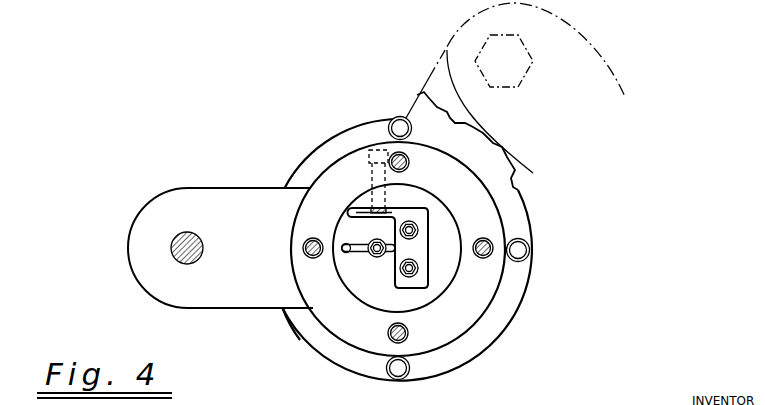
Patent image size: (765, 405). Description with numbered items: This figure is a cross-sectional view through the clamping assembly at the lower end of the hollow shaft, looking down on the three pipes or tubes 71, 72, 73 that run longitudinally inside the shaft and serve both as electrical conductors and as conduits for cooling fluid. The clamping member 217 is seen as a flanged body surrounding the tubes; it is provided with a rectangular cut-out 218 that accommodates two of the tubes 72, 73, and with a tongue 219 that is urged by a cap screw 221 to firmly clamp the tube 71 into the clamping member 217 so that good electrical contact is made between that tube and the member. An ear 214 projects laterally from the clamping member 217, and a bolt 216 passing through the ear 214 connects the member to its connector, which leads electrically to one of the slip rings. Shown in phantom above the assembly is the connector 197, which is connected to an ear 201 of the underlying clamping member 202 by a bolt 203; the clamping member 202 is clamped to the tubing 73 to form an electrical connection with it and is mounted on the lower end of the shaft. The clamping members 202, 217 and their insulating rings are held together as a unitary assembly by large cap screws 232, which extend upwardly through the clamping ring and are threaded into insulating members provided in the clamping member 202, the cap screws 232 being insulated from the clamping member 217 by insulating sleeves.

The clamping member 202 is at (328, 140).
The ear 214 is at (227, 197).
The bolt 216 is at (184, 253).
The cap screws 232 is at (390, 166).
The cap screw 221 is at (372, 161).
The tongue 219 is at (391, 222).
The rectangular cut-out 218 is at (422, 243).
The pipe or tube 72 is at (416, 227).
The pipe or tube 73 is at (419, 265).
The pipe or tube 71 is at (376, 257).
The clamping member 217 is at (325, 337).
The ear 201 is at (414, 72).
The connector 197 is at (612, 73).
The bolt 203 is at (531, 56).